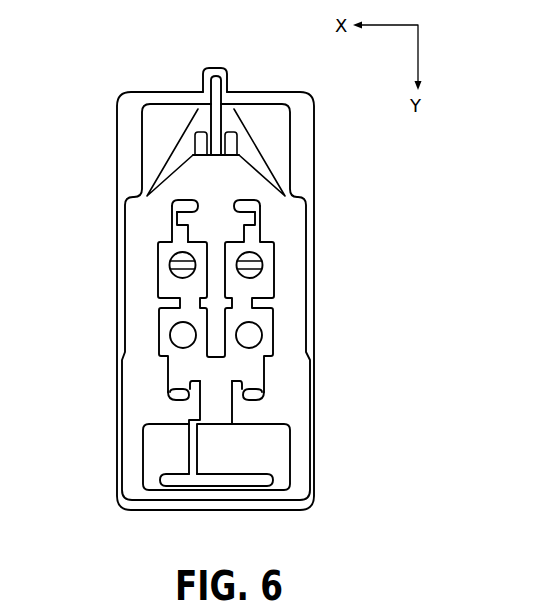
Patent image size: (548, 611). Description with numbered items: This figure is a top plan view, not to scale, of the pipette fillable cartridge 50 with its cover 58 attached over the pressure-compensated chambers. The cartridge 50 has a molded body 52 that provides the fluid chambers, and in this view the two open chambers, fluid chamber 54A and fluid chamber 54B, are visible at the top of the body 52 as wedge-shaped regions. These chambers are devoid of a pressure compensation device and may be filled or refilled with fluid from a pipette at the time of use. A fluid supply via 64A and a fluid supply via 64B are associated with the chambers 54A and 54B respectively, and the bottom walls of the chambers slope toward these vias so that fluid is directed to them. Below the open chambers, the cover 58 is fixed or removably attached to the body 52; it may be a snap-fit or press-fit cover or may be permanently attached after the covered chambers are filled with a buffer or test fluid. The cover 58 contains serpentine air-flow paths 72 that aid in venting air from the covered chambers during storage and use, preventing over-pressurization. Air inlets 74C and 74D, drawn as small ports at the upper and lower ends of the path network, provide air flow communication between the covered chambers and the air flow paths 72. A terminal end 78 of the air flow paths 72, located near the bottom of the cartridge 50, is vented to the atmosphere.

The cartridge 50 is at (105, 104).
The molded body 52 is at (300, 156).
The fluid chamber 54A is at (166, 124).
The fluid chamber 54B is at (273, 124).
The fluid supply via 64A is at (198, 132).
The fluid supply via 64B is at (230, 132).
The cover 58 is at (292, 312).
The serpentine air-flow paths 72 is at (282, 296).
The air inlet 74C is at (178, 206).
The air inlet 74D is at (254, 206).
The terminal end 78 is at (128, 503).